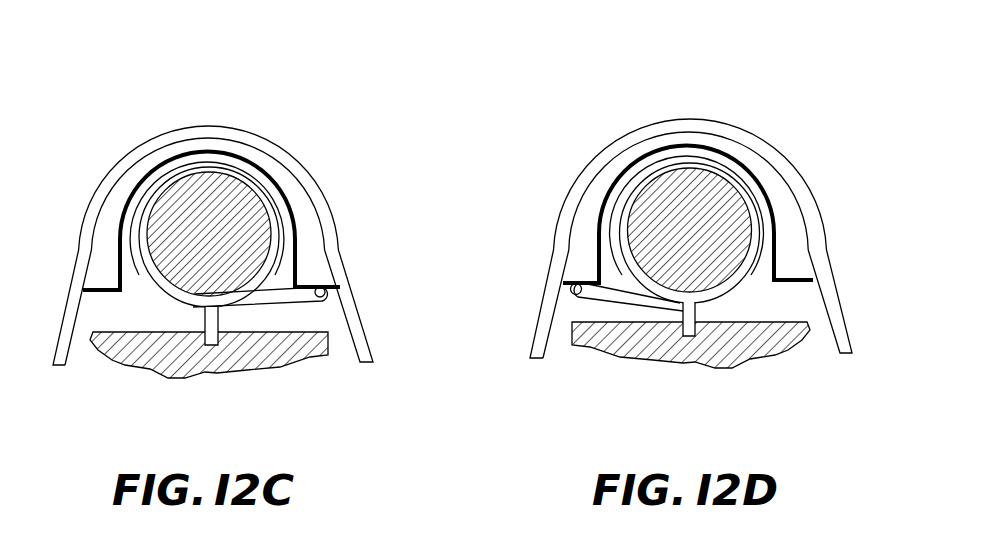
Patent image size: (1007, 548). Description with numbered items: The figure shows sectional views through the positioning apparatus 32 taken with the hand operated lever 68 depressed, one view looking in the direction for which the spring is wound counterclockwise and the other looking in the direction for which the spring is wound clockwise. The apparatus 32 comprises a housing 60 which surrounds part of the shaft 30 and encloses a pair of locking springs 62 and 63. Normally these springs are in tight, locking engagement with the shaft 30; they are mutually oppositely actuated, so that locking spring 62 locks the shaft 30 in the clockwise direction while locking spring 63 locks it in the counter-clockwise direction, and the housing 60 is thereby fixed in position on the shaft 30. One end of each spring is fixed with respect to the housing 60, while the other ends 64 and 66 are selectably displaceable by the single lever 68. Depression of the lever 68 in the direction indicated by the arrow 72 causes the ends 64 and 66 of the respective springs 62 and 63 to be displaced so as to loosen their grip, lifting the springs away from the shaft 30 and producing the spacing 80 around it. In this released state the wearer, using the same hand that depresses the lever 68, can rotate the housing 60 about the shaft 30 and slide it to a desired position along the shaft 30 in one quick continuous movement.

In FIG. 12C, the shaft 30 is at (175, 236).
In FIG. 12D, the shaft 30 is at (655, 235).
In FIG. 12C, the positioning apparatus 32 is at (282, 123).
In FIG. 12D, the positioning apparatus 32 is at (600, 120).
In FIG. 12C, the housing 60 is at (152, 362).
In FIG. 12D, the housing 60 is at (750, 360).
In FIG. 12C, the locking spring 62 is at (142, 205).
In FIG. 12D, the locking spring 63 is at (748, 196).
In FIG. 12C, the displaceable end of locking spring 64 is at (290, 295).
In FIG. 12D, the displaceable end of locking spring 66 is at (608, 291).
In FIG. 12C, the hand operated lever 68 is at (149, 167).
In FIG. 12D, the hand operated lever 68 is at (746, 162).
In FIG. 12C, the direction of lever depression 72 is at (203, 102).
In FIG. 12D, the direction of lever depression 72 is at (686, 100).
In FIG. 12C, the spacing 80 is at (272, 197).
In FIG. 12D, the spacing 80 is at (632, 196).